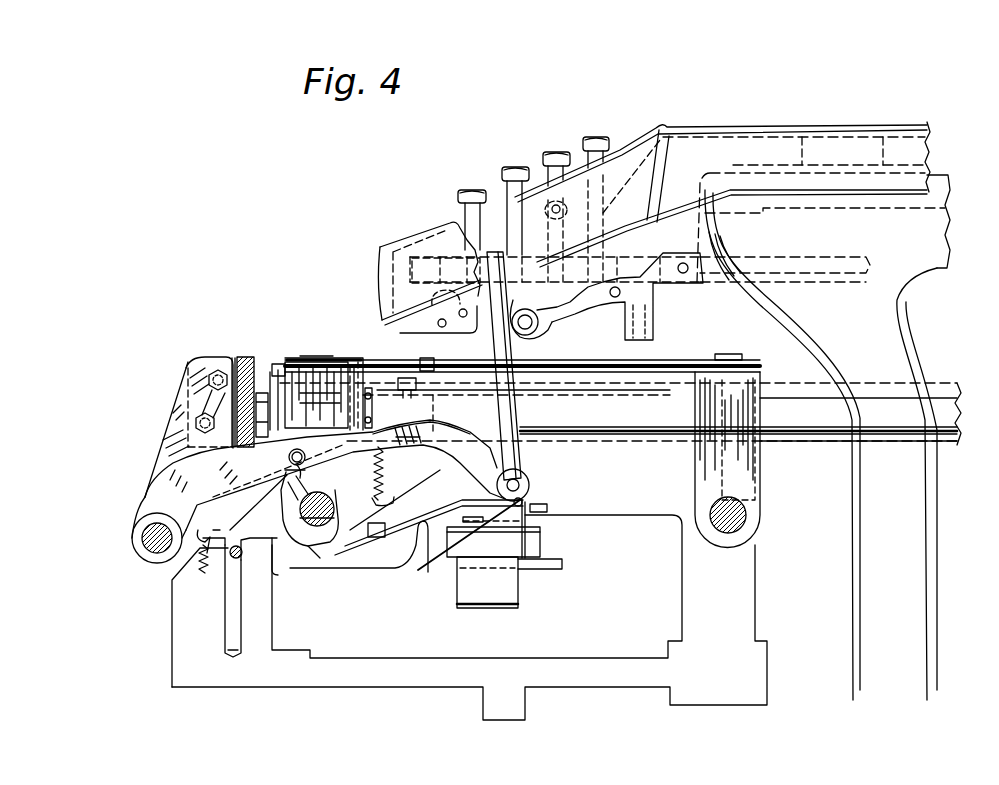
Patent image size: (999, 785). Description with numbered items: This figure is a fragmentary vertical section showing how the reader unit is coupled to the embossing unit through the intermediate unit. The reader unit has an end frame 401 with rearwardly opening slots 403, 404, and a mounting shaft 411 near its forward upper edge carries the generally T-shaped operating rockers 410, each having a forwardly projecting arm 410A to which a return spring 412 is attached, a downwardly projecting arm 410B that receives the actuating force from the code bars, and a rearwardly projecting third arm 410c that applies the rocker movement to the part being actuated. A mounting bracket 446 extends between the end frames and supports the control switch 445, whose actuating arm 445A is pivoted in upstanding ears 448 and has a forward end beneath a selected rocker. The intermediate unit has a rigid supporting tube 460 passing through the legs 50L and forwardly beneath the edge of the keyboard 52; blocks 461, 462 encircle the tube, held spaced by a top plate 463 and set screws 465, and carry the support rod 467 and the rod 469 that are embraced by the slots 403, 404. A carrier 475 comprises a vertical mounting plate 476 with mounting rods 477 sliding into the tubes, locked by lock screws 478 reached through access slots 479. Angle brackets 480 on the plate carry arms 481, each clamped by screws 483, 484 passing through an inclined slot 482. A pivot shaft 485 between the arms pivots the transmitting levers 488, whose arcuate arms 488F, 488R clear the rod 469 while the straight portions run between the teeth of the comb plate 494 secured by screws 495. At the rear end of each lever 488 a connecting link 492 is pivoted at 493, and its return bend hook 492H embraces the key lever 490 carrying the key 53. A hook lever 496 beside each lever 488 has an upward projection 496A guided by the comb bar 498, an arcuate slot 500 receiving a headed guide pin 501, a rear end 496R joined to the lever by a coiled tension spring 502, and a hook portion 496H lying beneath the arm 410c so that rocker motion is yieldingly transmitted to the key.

The keyboard 52 is at (646, 130).
The key 53 is at (463, 190).
The return bend hook 492H is at (485, 262).
The key lever 490 is at (710, 272).
The legs 50L is at (875, 348).
The top plate 463 is at (572, 362).
The supporting tube 460 is at (948, 445).
The block 461 is at (735, 450).
The rearwardly opening slot 403 is at (760, 498).
The support rod 467 is at (740, 522).
The end frame 401 is at (172, 660).
The operating rocker 410 is at (225, 608).
The downwardly projecting arm 410B is at (231, 656).
The mounting shaft 411 is at (232, 556).
The return spring 412 is at (200, 560).
The forwardly projecting arm 410A is at (208, 535).
The third arm 410c is at (276, 575).
The pivot shaft 485 is at (138, 543).
The arcuate arm 488F is at (143, 497).
The transmitting lever 488 is at (470, 453).
The arcuate arm 488R is at (435, 428).
The arm 481 is at (166, 437).
The screw 483 is at (198, 358).
The angle bracket 480 is at (178, 377).
The slot 482 is at (205, 402).
The screw 484 is at (196, 422).
The carrier 475 is at (231, 352).
The mounting plate 476 is at (247, 354).
The mounting rod 477 is at (263, 392).
The upward projection 496A is at (278, 364).
The set screw 465 is at (323, 358).
The guiding comb bar 498 is at (318, 405).
The comb plate 494 is at (362, 362).
The screw 495 is at (373, 398).
The lock screw 478 is at (417, 383).
The access slot 479 is at (427, 358).
The connecting link 492 is at (507, 348).
The pivot 493 is at (520, 485).
The rod 469 is at (300, 508).
The arcuate slot 500 is at (288, 453).
The headed guide pin 501 is at (300, 478).
The block 462 is at (285, 480).
The coiled tension spring 502 is at (385, 464).
The rear end 496R is at (388, 502).
The hook lever 496 is at (400, 508).
The rearwardly opening slot 404 is at (373, 537).
The hook portion 496H is at (318, 558).
The actuating arm 445A is at (420, 571).
The control switch 445 is at (540, 538).
The upstanding ear 448 is at (528, 528).
The mounting bracket 446 is at (535, 570).